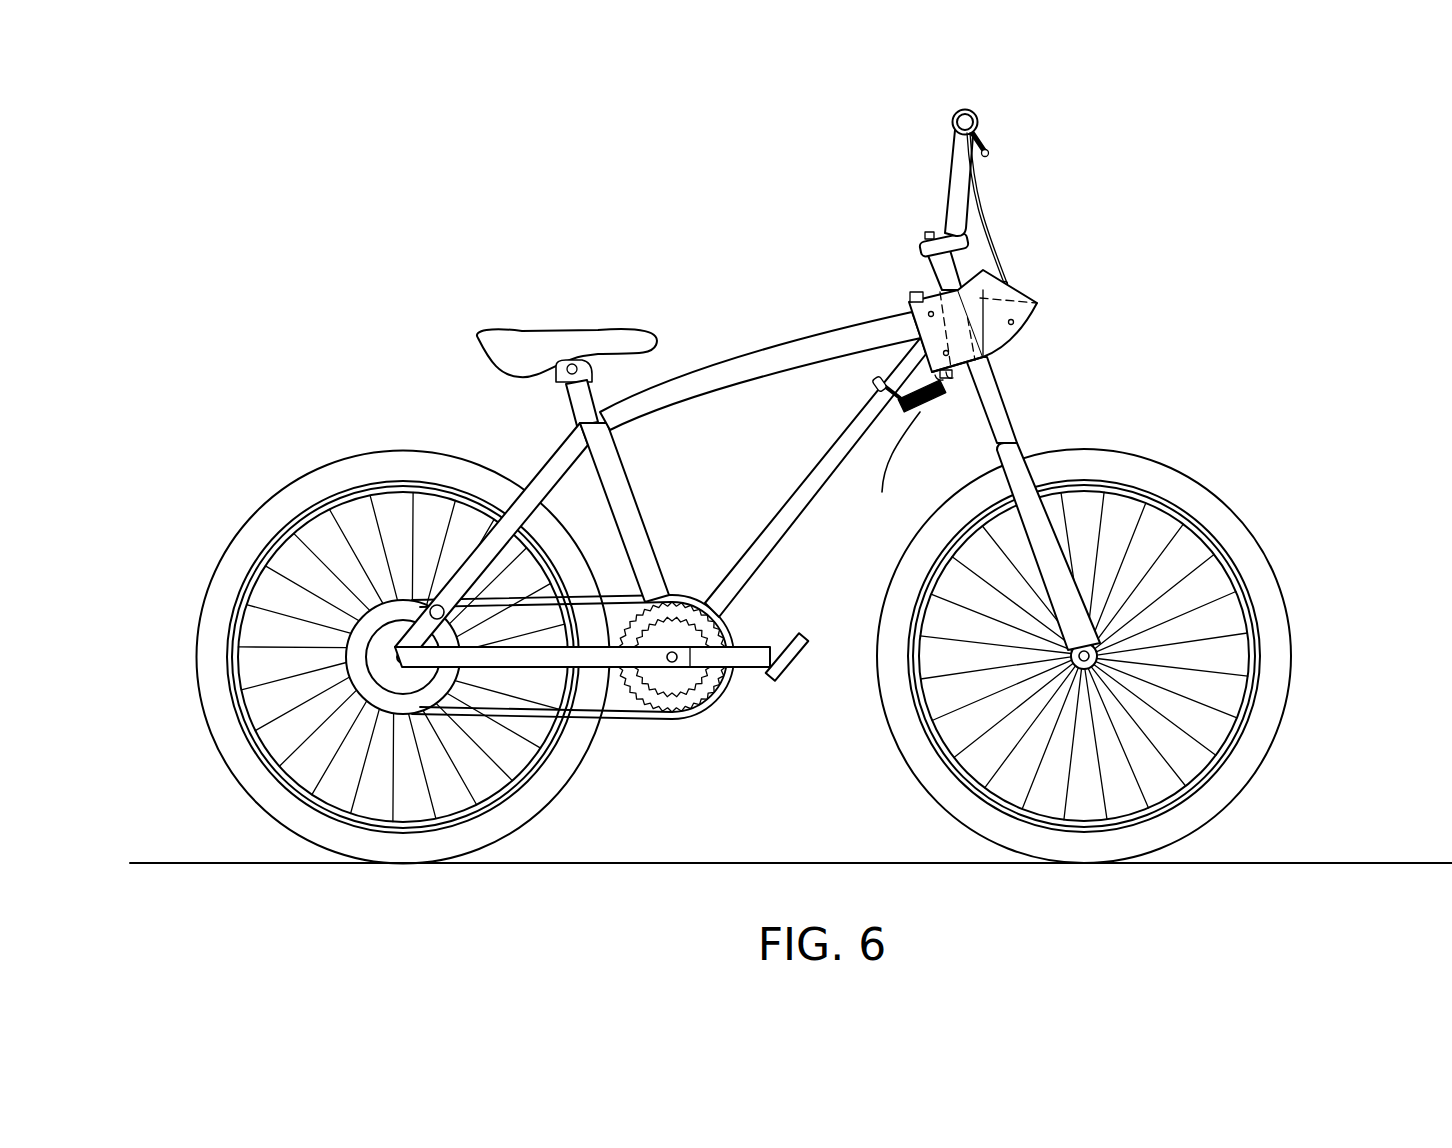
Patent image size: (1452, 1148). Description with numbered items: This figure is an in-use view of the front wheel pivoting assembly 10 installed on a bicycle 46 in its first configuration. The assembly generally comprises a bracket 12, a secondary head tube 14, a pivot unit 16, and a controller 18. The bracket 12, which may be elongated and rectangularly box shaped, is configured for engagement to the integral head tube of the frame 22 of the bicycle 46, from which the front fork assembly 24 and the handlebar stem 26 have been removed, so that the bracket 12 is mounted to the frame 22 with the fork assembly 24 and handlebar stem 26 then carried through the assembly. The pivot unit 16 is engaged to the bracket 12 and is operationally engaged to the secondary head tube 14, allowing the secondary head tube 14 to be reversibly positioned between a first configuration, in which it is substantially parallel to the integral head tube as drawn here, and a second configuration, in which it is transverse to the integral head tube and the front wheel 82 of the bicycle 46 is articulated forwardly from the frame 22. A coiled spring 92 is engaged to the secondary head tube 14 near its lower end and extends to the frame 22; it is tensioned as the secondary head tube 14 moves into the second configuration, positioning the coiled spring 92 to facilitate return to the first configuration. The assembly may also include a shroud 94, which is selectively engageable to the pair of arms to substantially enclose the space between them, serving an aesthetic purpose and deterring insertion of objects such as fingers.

The front wheel pivoting assembly 10 is at (1130, 125).
The bracket 12 is at (906, 312).
The secondary head tube 14 is at (1005, 367).
The pivot unit 16 is at (1040, 303).
The controller 18 is at (998, 255).
The frame 22 is at (803, 345).
The front fork assembly 24 is at (1000, 418).
The handlebar stem 26 is at (935, 263).
The bicycle 46 is at (655, 225).
The front wheel 82 is at (1191, 488).
The coiled spring 92 is at (906, 451).
The shroud 94 is at (988, 320).